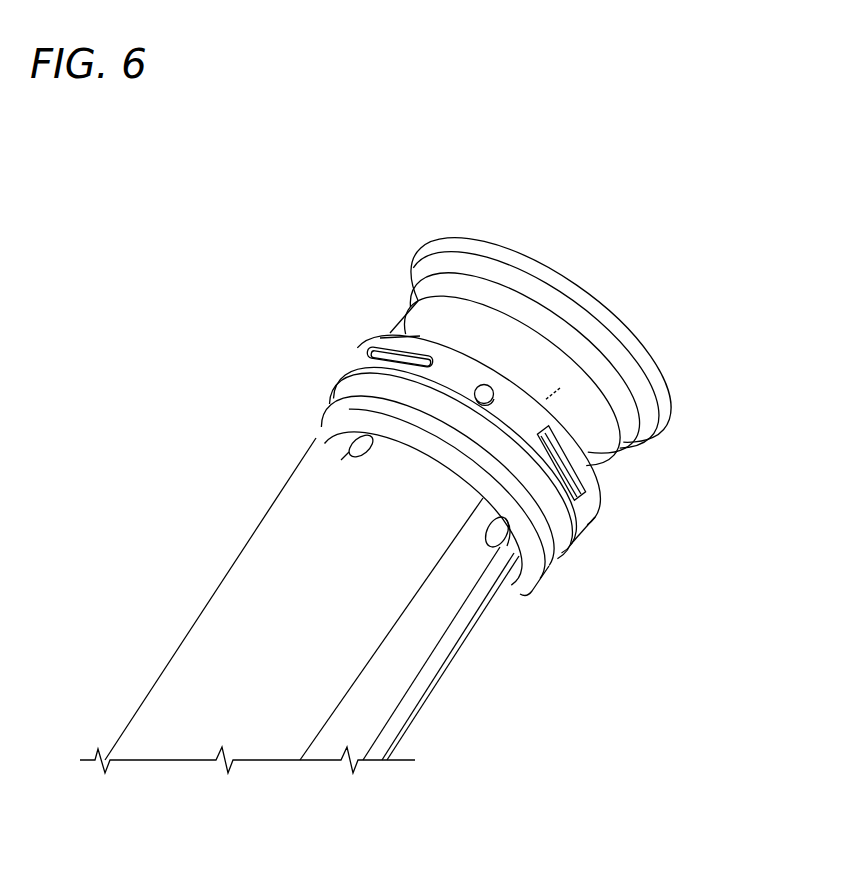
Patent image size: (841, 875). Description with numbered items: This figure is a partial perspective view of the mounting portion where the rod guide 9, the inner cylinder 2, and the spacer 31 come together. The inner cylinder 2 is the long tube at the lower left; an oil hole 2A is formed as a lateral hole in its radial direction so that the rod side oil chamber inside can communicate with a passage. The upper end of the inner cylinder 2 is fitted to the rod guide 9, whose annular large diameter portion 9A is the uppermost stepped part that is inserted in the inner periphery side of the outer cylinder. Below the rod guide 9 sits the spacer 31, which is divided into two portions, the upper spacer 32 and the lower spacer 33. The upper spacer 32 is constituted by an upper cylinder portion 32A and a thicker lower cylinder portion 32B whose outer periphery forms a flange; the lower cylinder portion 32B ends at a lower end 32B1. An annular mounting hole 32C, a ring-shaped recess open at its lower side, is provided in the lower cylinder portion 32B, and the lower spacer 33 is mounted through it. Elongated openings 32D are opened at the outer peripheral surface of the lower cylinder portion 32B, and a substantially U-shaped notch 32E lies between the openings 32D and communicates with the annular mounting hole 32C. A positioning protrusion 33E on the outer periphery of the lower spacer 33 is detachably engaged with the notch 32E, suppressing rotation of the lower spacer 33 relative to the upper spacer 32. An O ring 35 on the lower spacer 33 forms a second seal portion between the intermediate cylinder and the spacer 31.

The inner cylinder 2 is at (250, 645).
The oil hole 2A is at (348, 440).
The rod guide 9 is at (443, 238).
The large diameter portion 9A is at (660, 383).
The spacer 31 is at (357, 342).
The upper spacer 32 is at (597, 477).
The upper cylinder portion 32A is at (525, 355).
The lower cylinder portion 32B is at (430, 350).
The lower end 32B1 is at (365, 355).
The annular mounting hole 32C is at (340, 386).
The openings 32D is at (392, 334).
The notch 32E is at (472, 385).
The lower spacer 33 is at (582, 508).
The positioning protrusion 33E is at (560, 388).
The O ring 35 is at (332, 410).